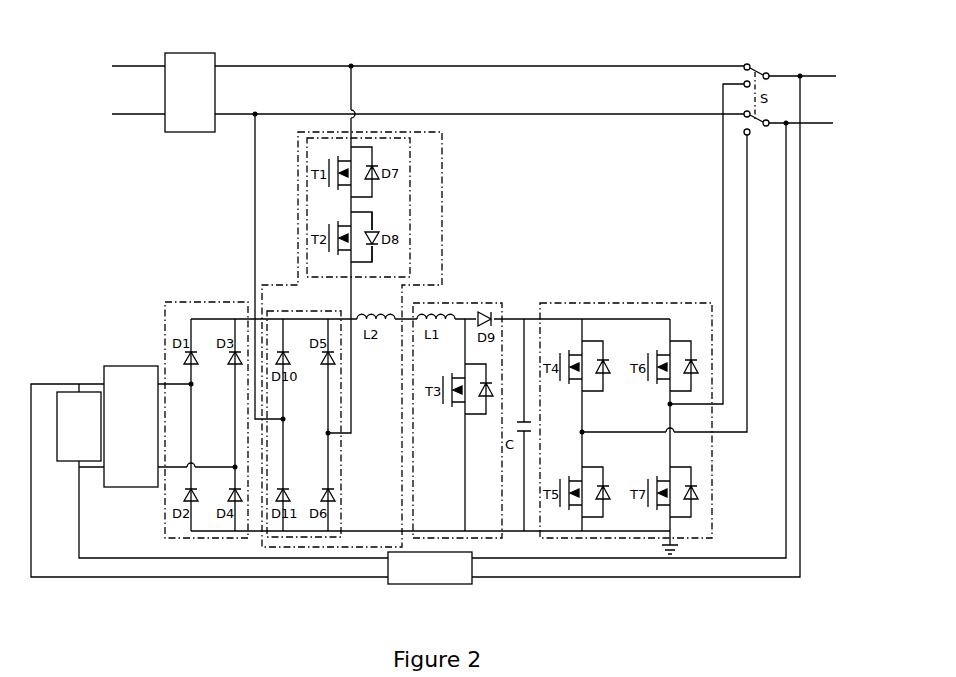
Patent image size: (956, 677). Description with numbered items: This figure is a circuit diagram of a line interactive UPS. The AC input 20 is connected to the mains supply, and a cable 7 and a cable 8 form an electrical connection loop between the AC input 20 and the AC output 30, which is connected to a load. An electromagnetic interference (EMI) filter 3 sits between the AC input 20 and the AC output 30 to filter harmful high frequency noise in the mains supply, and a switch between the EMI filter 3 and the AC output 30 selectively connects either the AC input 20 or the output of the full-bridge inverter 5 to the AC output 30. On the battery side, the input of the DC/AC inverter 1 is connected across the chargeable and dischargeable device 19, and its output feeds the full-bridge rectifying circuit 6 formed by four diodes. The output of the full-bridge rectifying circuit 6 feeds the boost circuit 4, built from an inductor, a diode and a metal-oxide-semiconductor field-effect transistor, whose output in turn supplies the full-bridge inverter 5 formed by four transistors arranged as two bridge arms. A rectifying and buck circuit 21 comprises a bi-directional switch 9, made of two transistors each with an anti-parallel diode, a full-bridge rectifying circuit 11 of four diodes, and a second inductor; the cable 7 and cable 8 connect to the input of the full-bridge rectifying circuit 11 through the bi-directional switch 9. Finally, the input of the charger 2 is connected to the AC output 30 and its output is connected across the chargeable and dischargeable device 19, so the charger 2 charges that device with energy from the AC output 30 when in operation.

The DC/AC inverter 1 is at (137, 366).
The charger 2 is at (430, 584).
The electromagnetic interference (EMI) filter 3 is at (190, 53).
The boost circuit 4 is at (483, 303).
The full-bridge inverter 5 is at (625, 303).
The full-bridge rectifying circuit 6 is at (200, 302).
The cable 7 is at (518, 66).
The cable 8 is at (518, 114).
The bi-directional switch 9 is at (410, 200).
The full-bridge rectifying circuit 11 is at (341, 487).
The chargeable and dischargeable device 19 is at (75, 462).
The AC input 20 is at (126, 90).
The rectifying and buck circuit 21 is at (442, 208).
The AC output 30 is at (811, 100).